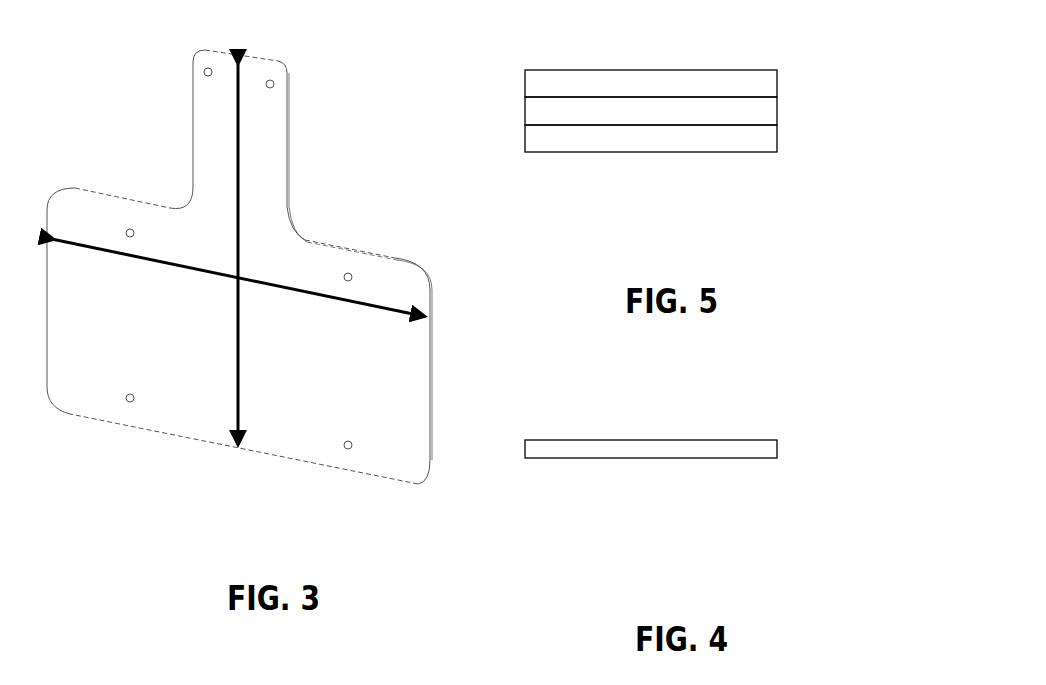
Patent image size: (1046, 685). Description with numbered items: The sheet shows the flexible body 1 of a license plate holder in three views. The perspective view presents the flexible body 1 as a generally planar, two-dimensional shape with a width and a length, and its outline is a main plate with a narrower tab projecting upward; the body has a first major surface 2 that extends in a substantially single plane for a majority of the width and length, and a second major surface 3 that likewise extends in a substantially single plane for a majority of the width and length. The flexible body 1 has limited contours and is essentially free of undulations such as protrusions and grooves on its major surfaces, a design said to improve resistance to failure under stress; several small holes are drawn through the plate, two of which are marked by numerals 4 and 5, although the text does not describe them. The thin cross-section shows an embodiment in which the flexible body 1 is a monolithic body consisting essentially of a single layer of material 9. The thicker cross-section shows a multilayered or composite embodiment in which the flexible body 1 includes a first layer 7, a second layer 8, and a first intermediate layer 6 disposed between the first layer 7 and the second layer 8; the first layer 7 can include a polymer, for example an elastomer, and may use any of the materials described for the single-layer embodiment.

In FIG. 3, the flexible body 1 is at (293, 278).
In FIG. 5, the flexible body 1 is at (698, 122).
In FIG. 4, the flexible body 1 is at (687, 457).
In FIG. 3, the first major surface 2 is at (268, 353).
In FIG. 3, the second major surface 3 is at (247, 155).
In FIG. 3, the mounting hole 4 is at (352, 282).
In FIG. 3, the mounting hole 5 is at (275, 88).
In FIG. 5, the first intermediate layer 6 is at (771, 110).
In FIG. 5, the first layer 7 is at (765, 145).
In FIG. 5, the second layer 8 is at (771, 82).
In FIG. 4, the single layer of material 9 is at (770, 448).